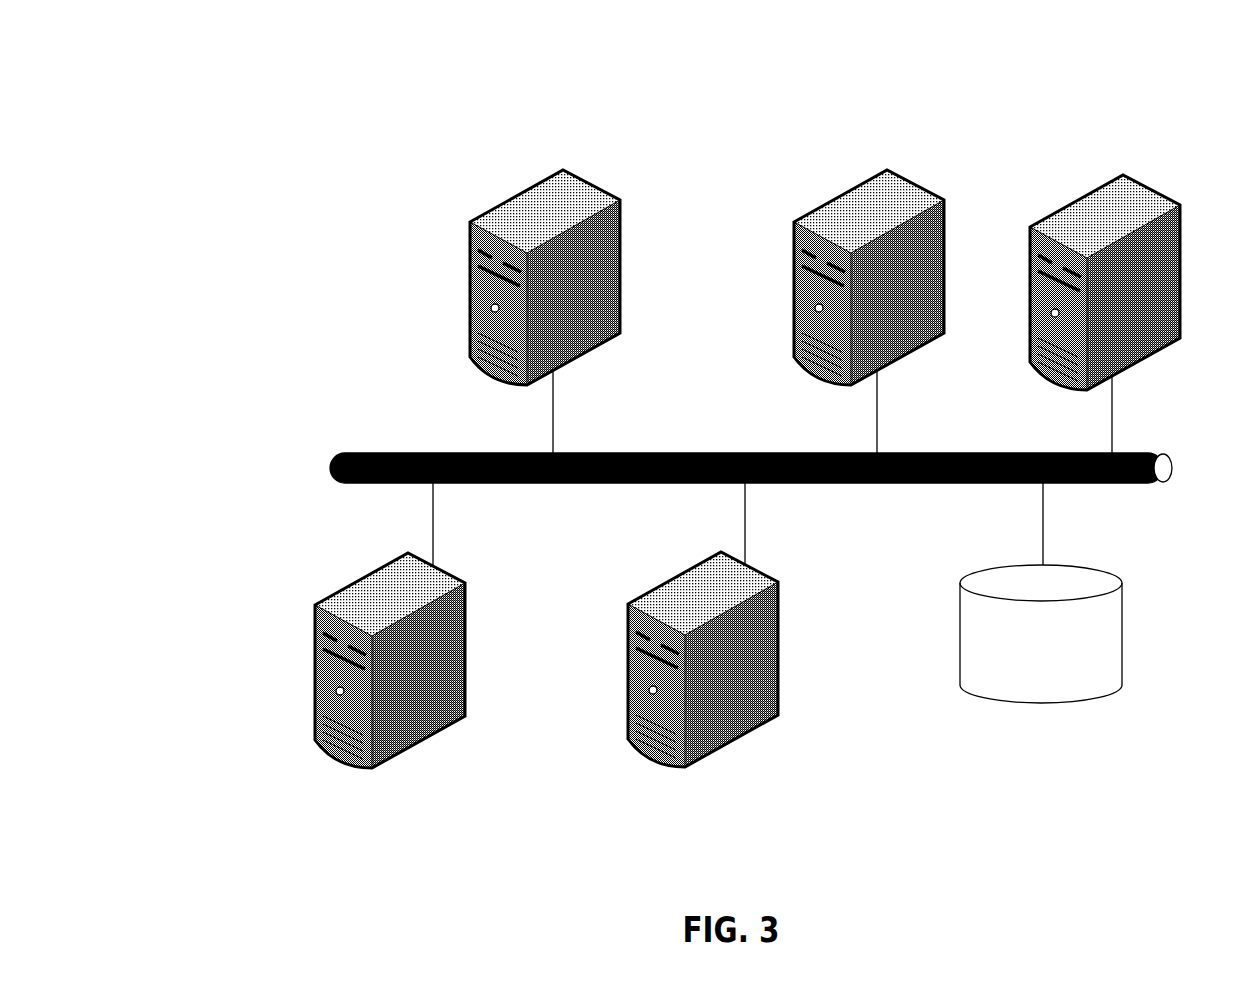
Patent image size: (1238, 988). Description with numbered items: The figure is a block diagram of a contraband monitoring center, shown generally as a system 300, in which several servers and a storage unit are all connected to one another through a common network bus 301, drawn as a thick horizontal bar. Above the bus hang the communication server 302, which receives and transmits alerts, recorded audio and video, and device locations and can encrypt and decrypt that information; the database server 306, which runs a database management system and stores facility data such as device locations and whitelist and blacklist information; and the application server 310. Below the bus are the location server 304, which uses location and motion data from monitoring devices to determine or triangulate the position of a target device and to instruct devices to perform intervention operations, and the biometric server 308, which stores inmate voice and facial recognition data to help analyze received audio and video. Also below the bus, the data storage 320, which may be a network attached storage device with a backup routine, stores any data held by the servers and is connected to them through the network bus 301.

The system 300 is at (63, 45).
The network bus 301 is at (1158, 484).
The communication server 302 is at (540, 178).
The location server 304 is at (322, 597).
The database server 306 is at (864, 178).
The biometric server 308 is at (636, 597).
The application server 310 is at (1100, 183).
The data storage 320 is at (1123, 628).